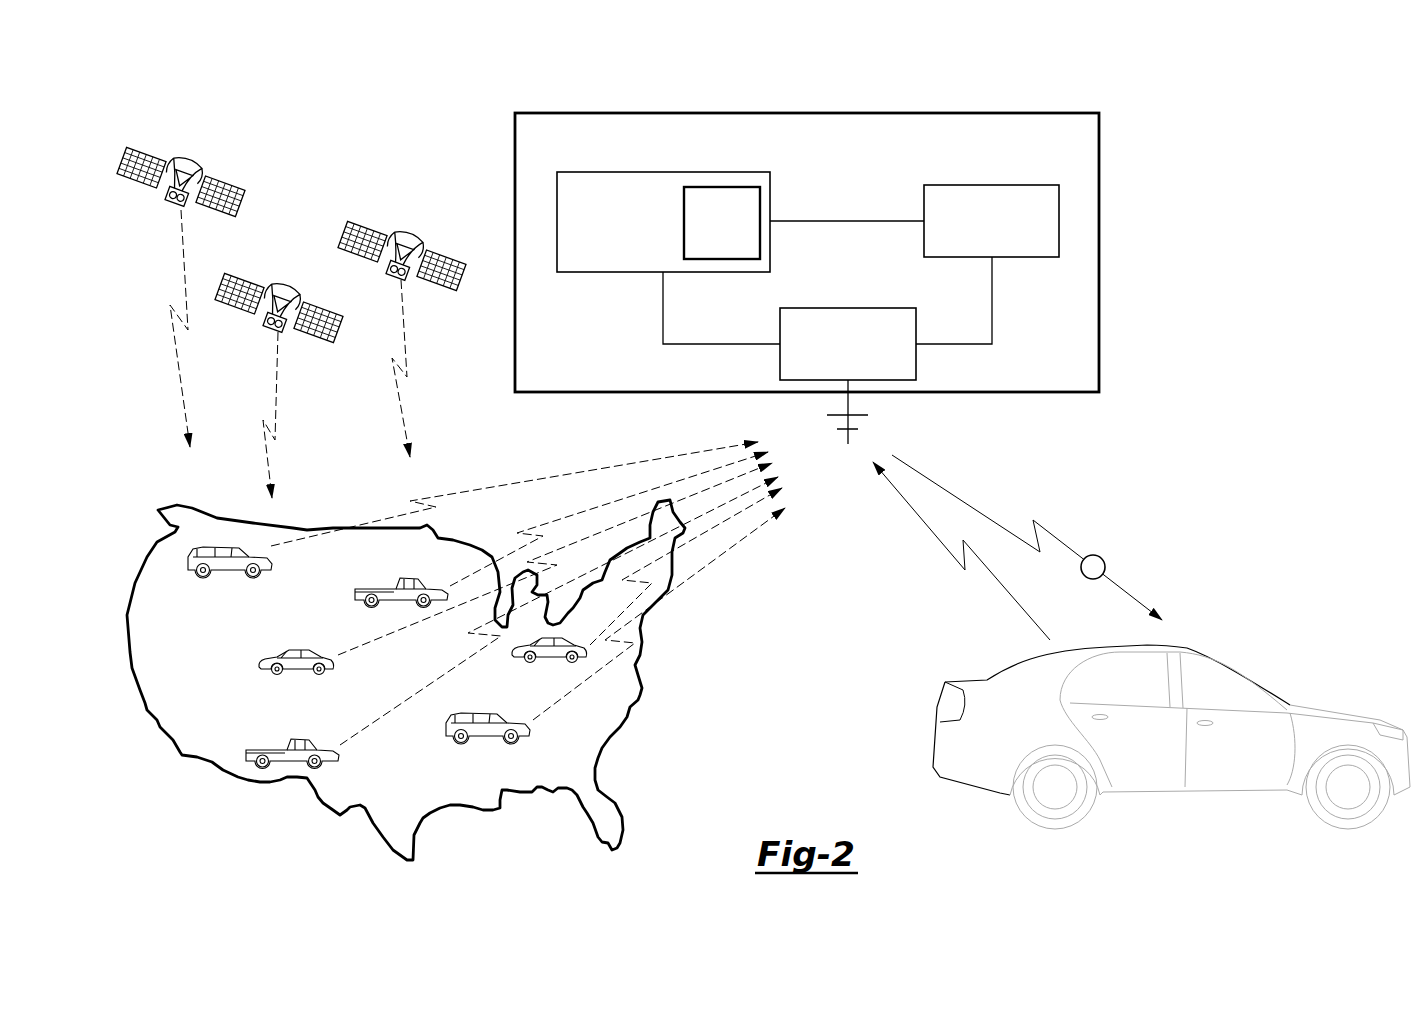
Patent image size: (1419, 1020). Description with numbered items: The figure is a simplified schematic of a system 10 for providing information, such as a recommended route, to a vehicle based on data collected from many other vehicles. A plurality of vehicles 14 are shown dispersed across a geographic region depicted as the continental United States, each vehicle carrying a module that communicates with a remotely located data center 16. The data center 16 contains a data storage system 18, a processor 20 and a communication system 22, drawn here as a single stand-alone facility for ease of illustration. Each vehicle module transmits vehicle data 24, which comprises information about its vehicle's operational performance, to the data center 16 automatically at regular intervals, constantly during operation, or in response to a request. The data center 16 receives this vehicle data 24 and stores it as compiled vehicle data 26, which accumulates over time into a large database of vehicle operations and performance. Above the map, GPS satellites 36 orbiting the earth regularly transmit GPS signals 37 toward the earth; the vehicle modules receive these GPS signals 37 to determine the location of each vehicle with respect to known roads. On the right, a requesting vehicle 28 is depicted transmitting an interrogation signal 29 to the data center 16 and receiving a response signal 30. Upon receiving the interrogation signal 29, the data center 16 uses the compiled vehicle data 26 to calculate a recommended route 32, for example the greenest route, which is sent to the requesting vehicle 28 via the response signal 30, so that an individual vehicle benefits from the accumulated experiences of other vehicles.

The system 10 is at (470, 90).
The vehicles 14 is at (232, 571).
The data center 16 is at (1100, 170).
The data storage system 18 is at (664, 172).
The processor 20 is at (993, 185).
The communication system 22 is at (848, 308).
The vehicle data 24 is at (391, 641).
The compiled vehicle data 26 is at (760, 203).
The requesting vehicle 28 is at (1230, 665).
The interrogation signal 29 is at (928, 525).
The response signal 30 is at (936, 483).
The recommended route 32 is at (1105, 560).
The GPS satellites 36 is at (213, 173).
The GPS signals 37 is at (181, 235).